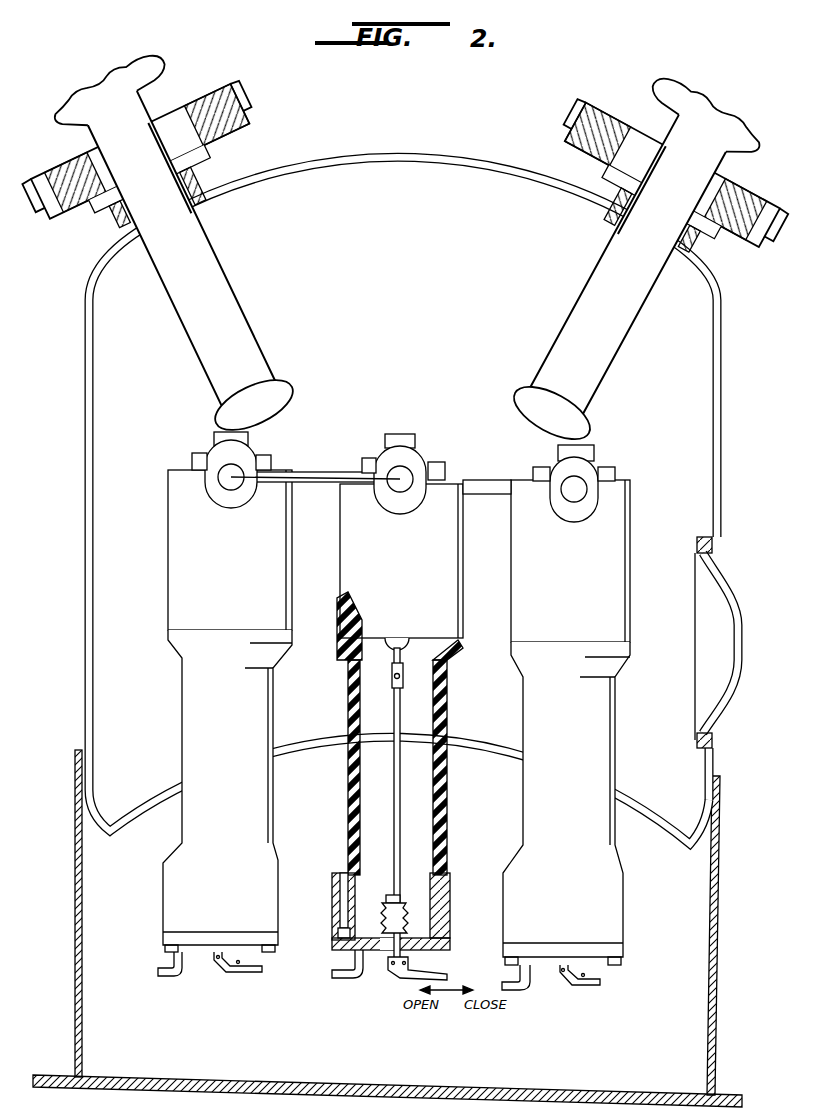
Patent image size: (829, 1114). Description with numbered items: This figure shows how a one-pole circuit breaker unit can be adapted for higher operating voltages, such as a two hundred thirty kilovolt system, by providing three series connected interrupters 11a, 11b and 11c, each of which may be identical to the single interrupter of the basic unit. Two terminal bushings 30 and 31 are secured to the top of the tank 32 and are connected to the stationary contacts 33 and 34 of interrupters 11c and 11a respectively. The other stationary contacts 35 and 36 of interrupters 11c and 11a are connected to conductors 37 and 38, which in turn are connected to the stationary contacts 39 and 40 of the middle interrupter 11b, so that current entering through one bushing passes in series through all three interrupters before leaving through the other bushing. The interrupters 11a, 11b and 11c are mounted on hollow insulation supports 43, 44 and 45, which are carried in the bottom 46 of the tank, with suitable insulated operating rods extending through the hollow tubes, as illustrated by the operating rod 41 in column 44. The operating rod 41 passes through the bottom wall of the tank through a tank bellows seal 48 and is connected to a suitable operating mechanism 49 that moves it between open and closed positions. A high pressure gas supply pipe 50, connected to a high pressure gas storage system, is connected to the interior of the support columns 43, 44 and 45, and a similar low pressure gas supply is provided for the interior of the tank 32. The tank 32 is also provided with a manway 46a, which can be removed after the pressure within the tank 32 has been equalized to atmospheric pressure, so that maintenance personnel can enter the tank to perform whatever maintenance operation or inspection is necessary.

The interrupter 11a is at (627, 583).
The interrupter 11b is at (463, 576).
The interrupter 11c is at (282, 576).
The terminal bushing 30 is at (247, 294).
The terminal bushing 31 is at (578, 312).
The tank 32 is at (83, 507).
The stationary contact 33 is at (190, 460).
The stationary contact 34 is at (615, 472).
The stationary contact 35 is at (264, 466).
The stationary contact 36 is at (533, 469).
The conductor 37 is at (324, 478).
The conductor 38 is at (485, 482).
The stationary contact 39 is at (368, 460).
The stationary contact 40 is at (438, 466).
The operating rod 41 is at (400, 784).
The hollow insulation support 43 is at (603, 794).
The hollow insulation support 44 is at (443, 766).
The hollow insulation support 45 is at (260, 772).
The bottom of the tank 46 is at (640, 893).
The manway 46a is at (720, 697).
The tank bellows seal 48 is at (427, 898).
The operating mechanism 49 is at (233, 972).
The high pressure gas supply pipe 50 is at (183, 980).